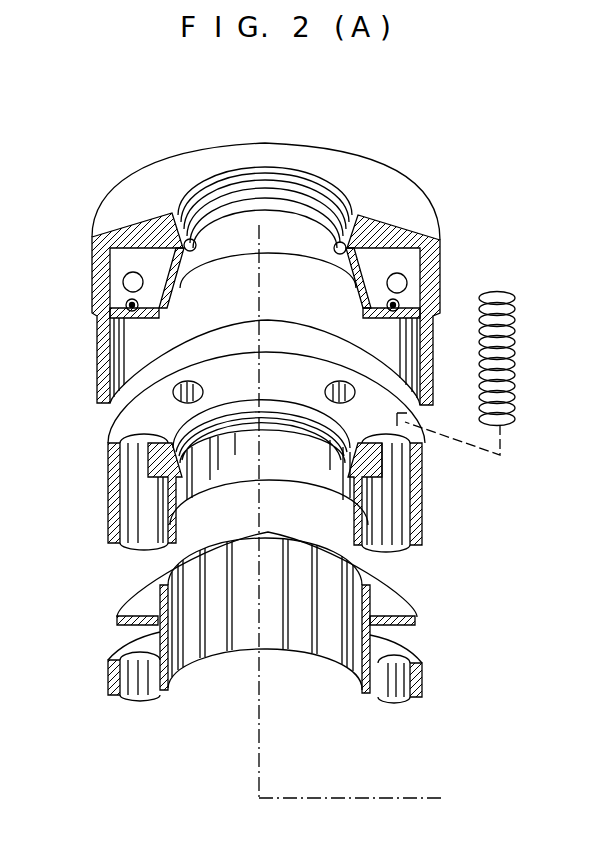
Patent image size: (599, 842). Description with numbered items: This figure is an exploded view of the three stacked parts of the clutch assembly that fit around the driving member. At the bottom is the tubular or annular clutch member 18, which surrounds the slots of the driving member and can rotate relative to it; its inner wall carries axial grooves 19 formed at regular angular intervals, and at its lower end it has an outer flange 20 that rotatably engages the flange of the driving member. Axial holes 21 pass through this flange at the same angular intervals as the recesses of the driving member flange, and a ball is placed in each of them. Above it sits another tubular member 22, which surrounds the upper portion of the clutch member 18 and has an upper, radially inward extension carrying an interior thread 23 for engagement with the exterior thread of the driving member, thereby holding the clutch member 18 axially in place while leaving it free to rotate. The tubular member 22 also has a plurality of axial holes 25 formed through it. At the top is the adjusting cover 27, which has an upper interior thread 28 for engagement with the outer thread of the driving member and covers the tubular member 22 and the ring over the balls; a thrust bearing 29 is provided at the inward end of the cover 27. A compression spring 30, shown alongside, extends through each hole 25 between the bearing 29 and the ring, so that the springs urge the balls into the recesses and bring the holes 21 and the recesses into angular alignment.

The tubular clutch member 18 is at (82, 660).
The axial grooves 19 is at (303, 638).
The outer flange 20 is at (400, 647).
The axial holes 21 is at (392, 677).
The tubular member 22 is at (76, 486).
The interior thread 23 is at (398, 410).
The axial holes 25 is at (398, 533).
The adjusting cover 27 is at (70, 295).
The interior thread 28 is at (345, 192).
The thrust bearing 29 is at (394, 279).
The compression spring 30 is at (513, 355).